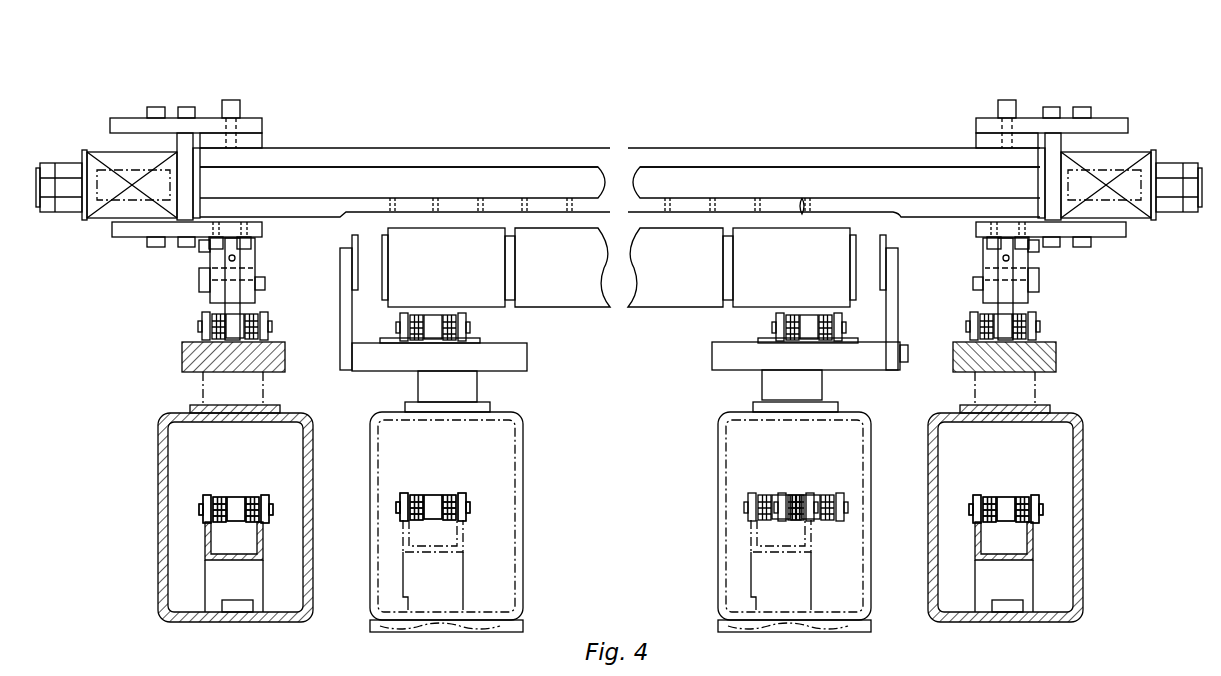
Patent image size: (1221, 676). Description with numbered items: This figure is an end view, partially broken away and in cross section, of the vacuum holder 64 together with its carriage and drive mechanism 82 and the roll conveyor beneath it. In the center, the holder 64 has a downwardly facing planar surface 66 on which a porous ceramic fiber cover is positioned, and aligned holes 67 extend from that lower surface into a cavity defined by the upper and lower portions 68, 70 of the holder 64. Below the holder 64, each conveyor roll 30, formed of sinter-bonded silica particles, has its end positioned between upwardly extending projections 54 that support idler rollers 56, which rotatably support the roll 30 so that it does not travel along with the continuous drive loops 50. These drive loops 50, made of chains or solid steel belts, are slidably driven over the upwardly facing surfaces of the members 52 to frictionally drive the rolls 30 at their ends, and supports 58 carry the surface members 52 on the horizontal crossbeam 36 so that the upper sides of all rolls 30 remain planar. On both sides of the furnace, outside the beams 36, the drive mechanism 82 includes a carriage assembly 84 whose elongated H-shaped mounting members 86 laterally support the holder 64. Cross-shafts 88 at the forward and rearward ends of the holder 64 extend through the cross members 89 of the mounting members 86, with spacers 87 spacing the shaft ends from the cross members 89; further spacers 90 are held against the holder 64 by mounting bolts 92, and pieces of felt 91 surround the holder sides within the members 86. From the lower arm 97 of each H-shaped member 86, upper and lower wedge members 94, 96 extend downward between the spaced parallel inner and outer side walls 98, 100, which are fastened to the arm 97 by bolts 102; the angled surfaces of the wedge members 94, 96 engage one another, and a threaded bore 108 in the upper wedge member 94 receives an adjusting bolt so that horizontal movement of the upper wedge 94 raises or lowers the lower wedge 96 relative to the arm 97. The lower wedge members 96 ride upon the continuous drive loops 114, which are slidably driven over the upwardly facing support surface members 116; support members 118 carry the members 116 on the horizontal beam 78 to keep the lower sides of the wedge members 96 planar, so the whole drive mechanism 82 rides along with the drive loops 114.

The conveyor roll 30 is at (838, 242).
The horizontal crossbeam 36 is at (522, 522).
The continuous drive loop 50 is at (462, 325).
The support surface member 52 is at (530, 357).
The upwardly extending projection 54 is at (358, 262).
The idler roller 56 is at (370, 243).
The support 58 is at (420, 385).
The vacuum holder 64 is at (800, 126).
The planar surface 66 is at (805, 210).
The holes 67 is at (758, 198).
The upper portion 68 is at (712, 148).
The lower portion 70 is at (852, 206).
The horizontal beam 78 is at (313, 516).
The drive mechanism 82 is at (126, 76).
The carriage assembly 84 is at (226, 103).
The H-shaped mounting member 86 is at (187, 113).
The spacer 87 is at (102, 212).
The cross-shaft 88 is at (870, 167).
The cross member 89 is at (182, 145).
The spacer 90 is at (258, 142).
The felt piece 91 is at (208, 212).
The mounting bolt 92 is at (242, 108).
The upper wedge member 94 is at (258, 276).
The lower wedge member 96 is at (242, 312).
The lower arm 97 is at (168, 240).
The inner side wall 98 is at (207, 255).
The outer side wall 100 is at (252, 290).
The bolt 102 is at (218, 229).
The threaded bore 108 is at (240, 258).
The continuous drive loop 114 is at (200, 322).
The support surface member 116 is at (182, 355).
The support member 118 is at (264, 392).